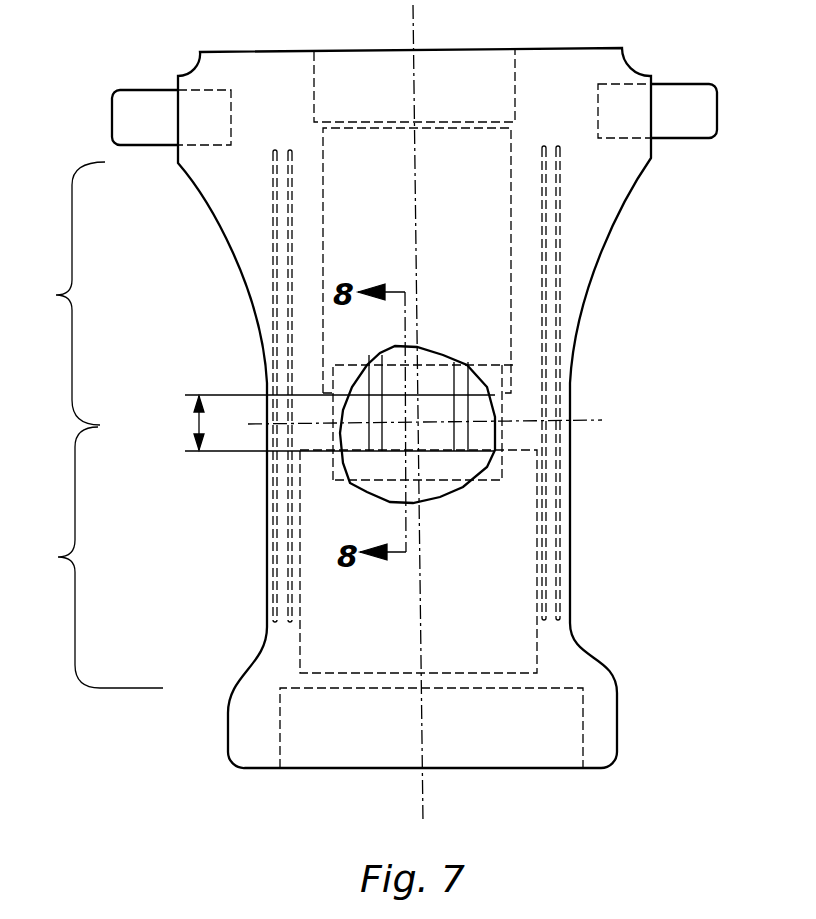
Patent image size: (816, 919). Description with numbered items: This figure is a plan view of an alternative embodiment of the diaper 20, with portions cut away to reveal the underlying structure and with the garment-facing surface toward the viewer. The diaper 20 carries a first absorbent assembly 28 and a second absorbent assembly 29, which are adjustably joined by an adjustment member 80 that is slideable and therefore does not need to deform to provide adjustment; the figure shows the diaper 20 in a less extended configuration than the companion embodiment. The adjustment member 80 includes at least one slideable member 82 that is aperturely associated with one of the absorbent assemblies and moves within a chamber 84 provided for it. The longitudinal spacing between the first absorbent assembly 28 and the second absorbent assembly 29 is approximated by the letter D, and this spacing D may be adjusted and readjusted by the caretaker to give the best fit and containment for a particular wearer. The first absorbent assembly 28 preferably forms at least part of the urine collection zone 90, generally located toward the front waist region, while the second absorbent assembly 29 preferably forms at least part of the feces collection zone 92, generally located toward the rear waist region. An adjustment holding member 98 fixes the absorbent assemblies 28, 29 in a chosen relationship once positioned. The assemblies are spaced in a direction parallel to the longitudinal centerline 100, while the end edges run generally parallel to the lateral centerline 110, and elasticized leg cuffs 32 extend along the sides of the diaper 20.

The diaper 20 is at (633, 377).
The first absorbent assembly 28 is at (325, 628).
The second absorbent assembly 29 is at (482, 293).
The elasticized leg cuffs 32 is at (288, 527).
The adjustment member 80 is at (377, 435).
The slideable member 82 is at (660, 403).
The chamber 84 is at (367, 382).
The urine collection zone 90 is at (58, 557).
The feces collection zone 92 is at (56, 295).
The adjustment holding member 98 is at (335, 463).
The longitudinal centerline 100 is at (415, 23).
The lateral centerline 110 is at (592, 420).
The longitudinal spacing D is at (197, 425).